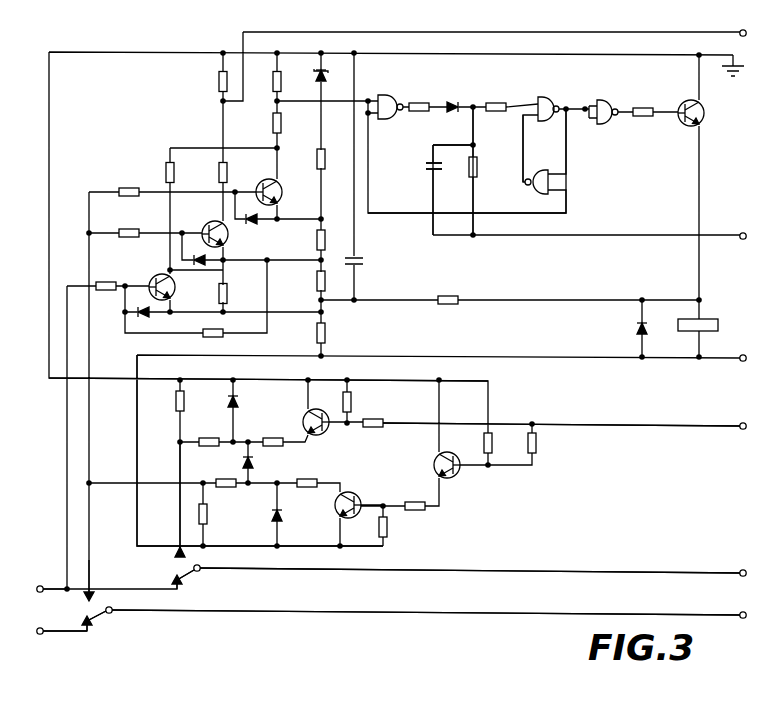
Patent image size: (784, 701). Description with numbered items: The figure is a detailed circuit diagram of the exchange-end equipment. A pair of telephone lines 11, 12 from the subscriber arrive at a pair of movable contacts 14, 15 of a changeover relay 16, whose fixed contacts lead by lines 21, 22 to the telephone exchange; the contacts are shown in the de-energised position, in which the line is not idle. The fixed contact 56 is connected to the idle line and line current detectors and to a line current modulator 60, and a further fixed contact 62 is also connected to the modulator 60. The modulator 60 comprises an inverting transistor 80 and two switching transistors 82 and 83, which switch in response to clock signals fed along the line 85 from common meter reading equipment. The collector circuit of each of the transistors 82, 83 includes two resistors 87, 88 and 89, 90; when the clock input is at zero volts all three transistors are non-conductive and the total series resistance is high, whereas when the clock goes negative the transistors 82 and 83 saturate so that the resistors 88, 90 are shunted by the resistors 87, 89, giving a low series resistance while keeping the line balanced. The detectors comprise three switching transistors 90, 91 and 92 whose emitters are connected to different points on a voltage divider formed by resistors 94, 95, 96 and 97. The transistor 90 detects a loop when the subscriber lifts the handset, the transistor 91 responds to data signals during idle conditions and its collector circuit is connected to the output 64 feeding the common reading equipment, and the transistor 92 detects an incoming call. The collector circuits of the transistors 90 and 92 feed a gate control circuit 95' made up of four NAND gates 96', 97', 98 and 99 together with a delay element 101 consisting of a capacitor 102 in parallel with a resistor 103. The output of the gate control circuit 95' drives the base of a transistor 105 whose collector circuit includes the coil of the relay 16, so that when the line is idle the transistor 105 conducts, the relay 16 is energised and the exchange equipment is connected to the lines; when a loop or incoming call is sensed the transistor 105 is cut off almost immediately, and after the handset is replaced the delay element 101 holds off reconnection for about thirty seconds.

The telephone line 11 is at (67, 633).
The telephone line 12 is at (60, 587).
The movable contact 14 is at (99, 615).
The movable contact 15 is at (190, 575).
The changeover relay 16 is at (704, 319).
The line 21 is at (461, 616).
The line 22 is at (546, 573).
The fixed contact 56 is at (176, 553).
The line current modulator 60 is at (388, 474).
The fixed contact 62 is at (86, 598).
The output 64 is at (570, 33).
The inverting transistor 80 is at (456, 477).
The switching transistor 82 is at (317, 409).
The switching transistor 83 is at (336, 512).
The line 85 is at (640, 424).
The resistor 87 is at (210, 437).
The resistor 88 is at (176, 406).
The resistor 89 is at (225, 478).
The resistor / switching transistor 90 is at (282, 196).
The switching transistor 91 is at (229, 238).
The switching transistor 92 is at (175, 289).
The resistor 94 is at (325, 159).
The resistor 95 is at (302, 241).
The gate control circuit 95' is at (467, 161).
The resistor 96 is at (302, 281).
The NAND gate 96' is at (397, 93).
The resistor 97 is at (345, 331).
The NAND gate 97' is at (561, 97).
The NAND gate 98 is at (549, 182).
The NAND gate 99 is at (605, 124).
The delay element 101 is at (467, 203).
The capacitor 102 is at (424, 168).
The resistor 103 is at (477, 169).
The transistor 105 is at (705, 113).